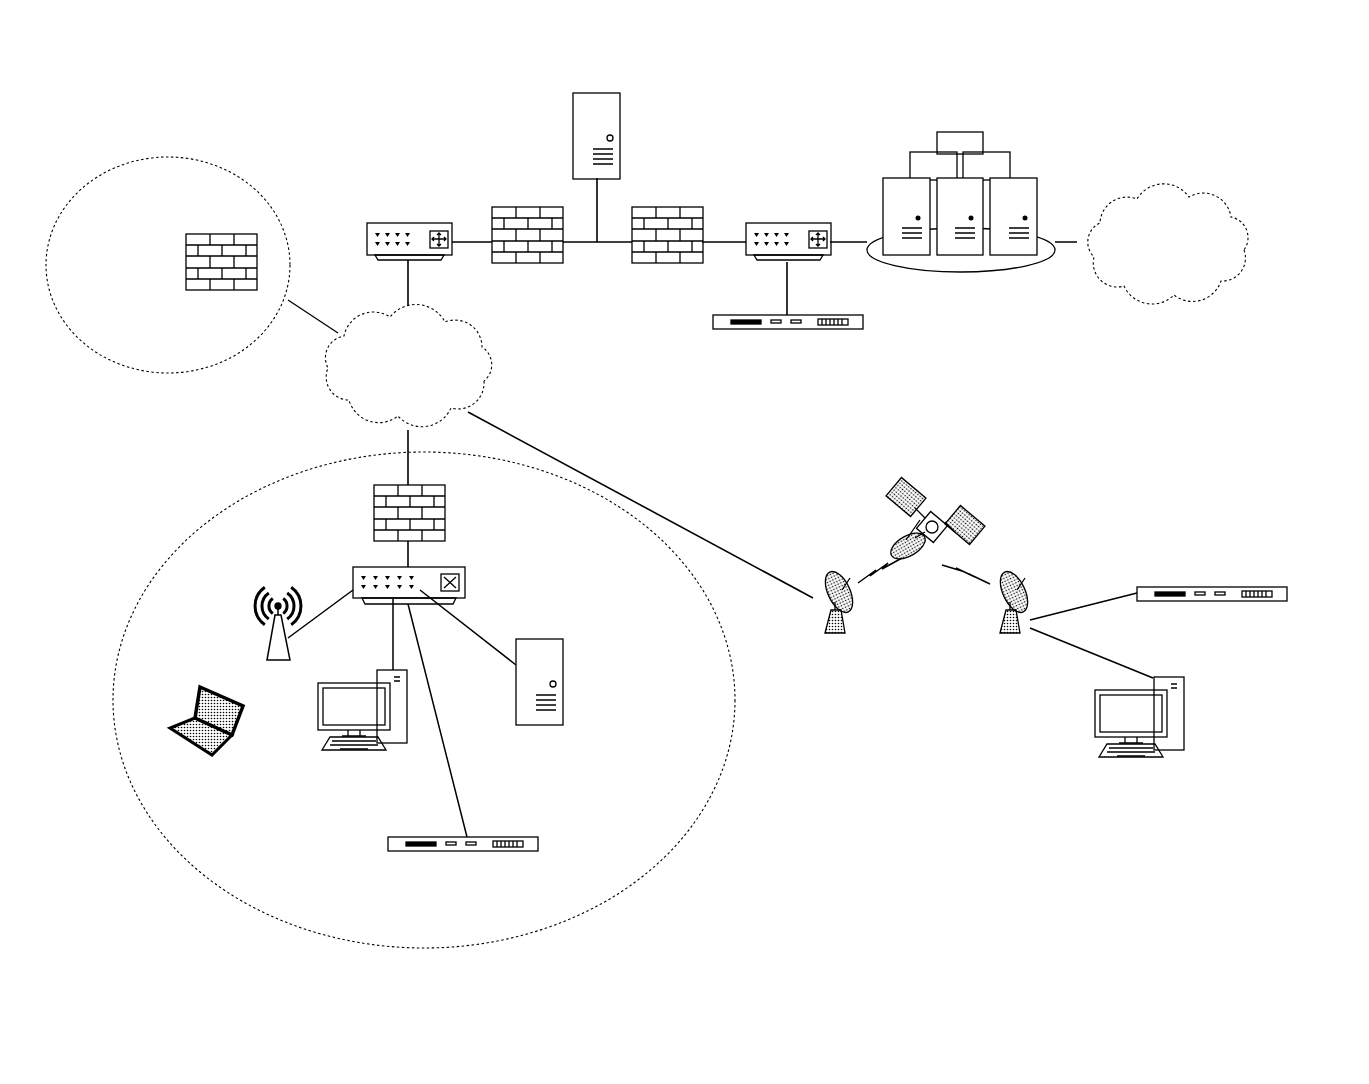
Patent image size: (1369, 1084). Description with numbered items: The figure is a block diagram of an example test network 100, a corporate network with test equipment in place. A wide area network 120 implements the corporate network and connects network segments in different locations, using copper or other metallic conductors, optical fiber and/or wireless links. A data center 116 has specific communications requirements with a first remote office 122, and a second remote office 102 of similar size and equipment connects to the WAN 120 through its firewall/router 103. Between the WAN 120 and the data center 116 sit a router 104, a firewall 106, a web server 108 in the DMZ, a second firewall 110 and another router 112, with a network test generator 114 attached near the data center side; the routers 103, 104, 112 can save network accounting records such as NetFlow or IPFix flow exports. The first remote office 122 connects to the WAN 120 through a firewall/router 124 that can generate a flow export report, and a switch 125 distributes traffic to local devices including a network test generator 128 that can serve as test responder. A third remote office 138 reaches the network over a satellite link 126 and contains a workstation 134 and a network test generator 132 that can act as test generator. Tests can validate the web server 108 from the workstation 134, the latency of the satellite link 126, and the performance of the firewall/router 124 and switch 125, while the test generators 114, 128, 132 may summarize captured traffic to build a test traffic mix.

The example test network 100 is at (1230, 71).
The second remote office 102 is at (168, 237).
The router 103 is at (220, 233).
The router 104 is at (367, 240).
The firewall 106 is at (502, 207).
The web server 108 is at (620, 120).
The firewall 110 is at (660, 207).
The router 112 is at (830, 223).
The network test generator 114 is at (813, 315).
The data center 116 is at (983, 132).
The wide area network (WAN) 120 is at (420, 381).
The first remote office 122 is at (192, 512).
The firewall/router 124 is at (374, 505).
The switch 125 is at (374, 567).
The satellite link 126 is at (983, 520).
The network test generator 128 is at (520, 837).
The network test generator 132 is at (1240, 600).
The workstation 134 is at (1185, 708).
The third remote office 138 is at (1216, 677).